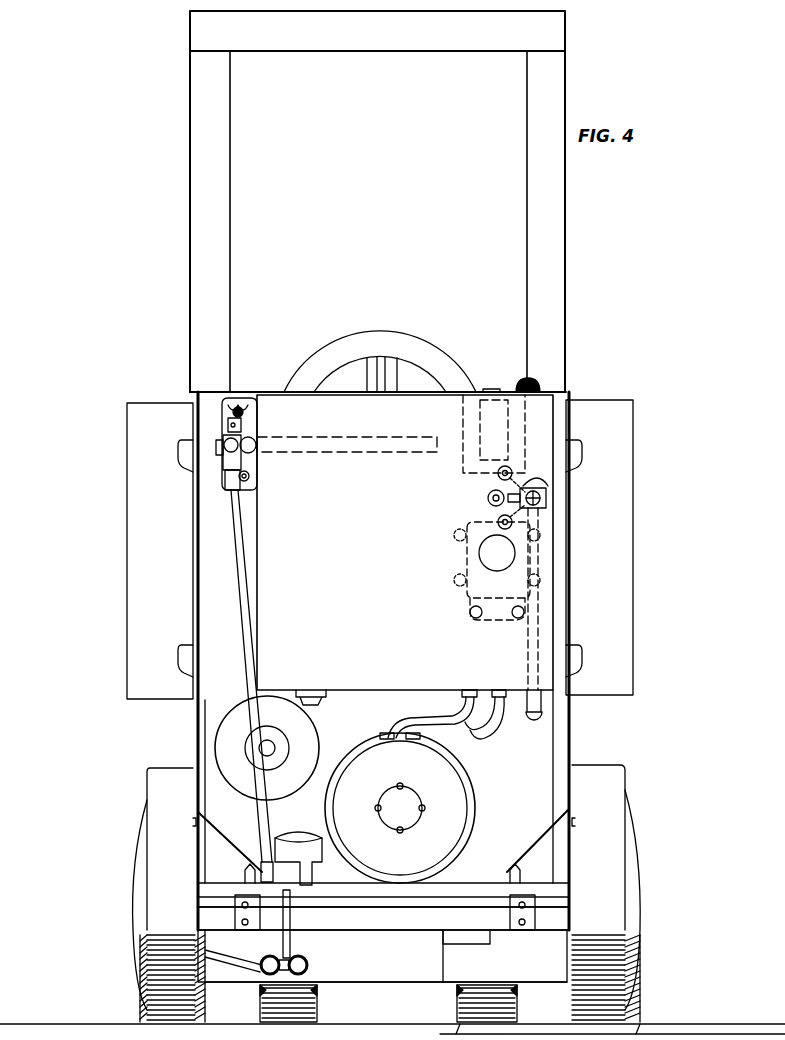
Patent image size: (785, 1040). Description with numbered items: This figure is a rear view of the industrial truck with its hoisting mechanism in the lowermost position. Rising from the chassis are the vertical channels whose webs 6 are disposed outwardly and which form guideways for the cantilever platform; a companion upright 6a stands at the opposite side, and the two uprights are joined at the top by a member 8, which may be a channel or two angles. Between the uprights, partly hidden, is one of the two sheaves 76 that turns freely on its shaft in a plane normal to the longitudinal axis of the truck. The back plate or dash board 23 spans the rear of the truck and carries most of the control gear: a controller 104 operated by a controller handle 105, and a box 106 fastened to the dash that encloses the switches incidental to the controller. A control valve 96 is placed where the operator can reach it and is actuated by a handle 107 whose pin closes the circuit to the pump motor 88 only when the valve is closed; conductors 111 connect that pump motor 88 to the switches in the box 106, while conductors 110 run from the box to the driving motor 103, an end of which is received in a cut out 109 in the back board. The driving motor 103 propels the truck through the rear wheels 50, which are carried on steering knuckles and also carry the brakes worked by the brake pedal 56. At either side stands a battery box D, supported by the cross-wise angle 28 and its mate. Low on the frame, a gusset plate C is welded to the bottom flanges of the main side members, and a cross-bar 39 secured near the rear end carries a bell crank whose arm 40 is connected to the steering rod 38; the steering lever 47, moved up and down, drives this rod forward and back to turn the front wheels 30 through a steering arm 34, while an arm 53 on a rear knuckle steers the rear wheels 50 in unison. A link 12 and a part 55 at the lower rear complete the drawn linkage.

The member 8 is at (362, 42).
The channel web 6 is at (200, 152).
The frame upright 6a is at (552, 277).
The sheave 76 is at (418, 346).
The battery box D is at (132, 466).
The box 106 is at (405, 542).
The lever 47 is at (345, 452).
The controller 104 is at (530, 407).
The controller handle 105 is at (536, 380).
The link 12 is at (236, 567).
The electric motor 88 is at (318, 740).
The conductors 111 is at (338, 706).
The control valve 96 is at (546, 493).
The handle 107 is at (488, 498).
The cut out 109 is at (486, 857).
The conductors 110 is at (470, 724).
The driving motor 103 is at (400, 808).
The brake pedal 56 is at (296, 842).
The back plate or dash board 23 is at (384, 661).
The cross-bar 39 is at (445, 905).
The gusset plate C is at (340, 986).
The bell crank arm 40 is at (290, 945).
The steering rod 38 is at (308, 965).
The wire 55 is at (270, 948).
The arm 53 is at (228, 968).
The steering arm 34 is at (300, 1012).
The angle 28 is at (540, 985).
The front wheel 30 is at (446, 1010).
The rear wheel 50 is at (150, 780).